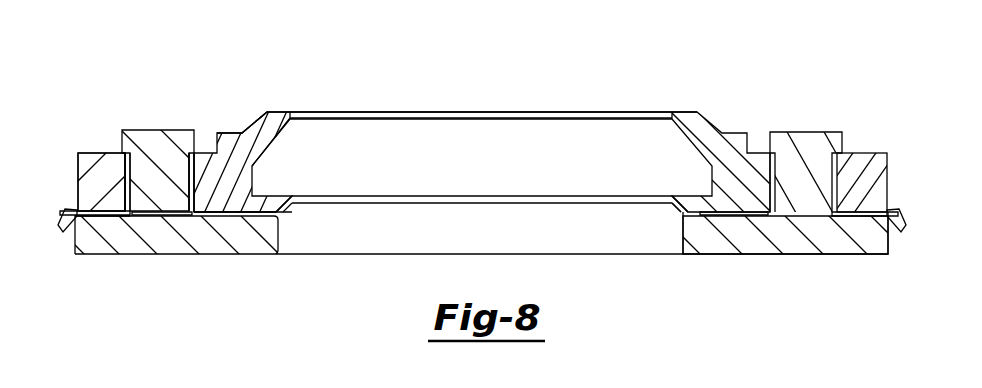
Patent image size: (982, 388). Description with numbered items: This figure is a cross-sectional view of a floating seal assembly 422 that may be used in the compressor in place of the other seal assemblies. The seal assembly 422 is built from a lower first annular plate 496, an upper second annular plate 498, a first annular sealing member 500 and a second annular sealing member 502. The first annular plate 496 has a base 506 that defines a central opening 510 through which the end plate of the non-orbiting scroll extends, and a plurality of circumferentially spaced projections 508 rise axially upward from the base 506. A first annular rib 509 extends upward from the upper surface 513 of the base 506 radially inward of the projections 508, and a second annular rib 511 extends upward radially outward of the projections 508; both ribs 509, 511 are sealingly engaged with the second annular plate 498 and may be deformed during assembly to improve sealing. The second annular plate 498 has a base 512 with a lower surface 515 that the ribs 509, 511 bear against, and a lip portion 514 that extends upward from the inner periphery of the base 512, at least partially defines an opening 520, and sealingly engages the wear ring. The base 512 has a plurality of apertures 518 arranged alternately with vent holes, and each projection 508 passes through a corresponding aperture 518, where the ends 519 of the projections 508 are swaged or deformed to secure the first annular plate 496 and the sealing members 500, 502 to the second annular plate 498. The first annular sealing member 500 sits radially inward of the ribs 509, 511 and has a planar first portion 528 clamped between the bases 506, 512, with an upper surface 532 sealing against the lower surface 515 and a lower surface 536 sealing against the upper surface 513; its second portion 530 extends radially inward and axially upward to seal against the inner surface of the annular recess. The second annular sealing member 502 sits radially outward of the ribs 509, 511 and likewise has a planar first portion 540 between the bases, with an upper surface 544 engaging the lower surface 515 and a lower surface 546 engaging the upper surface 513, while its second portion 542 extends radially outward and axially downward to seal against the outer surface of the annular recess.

The seal assembly 422 is at (789, 58).
The first annular plate 496 is at (803, 296).
The second annular plate 498 is at (90, 131).
The first annular sealing member 500 is at (666, 218).
The second annular sealing member 502 is at (903, 202).
The base 506 is at (853, 240).
The projections 508 is at (814, 160).
The first annular rib 509 is at (208, 215).
The central opening 510 is at (290, 214).
The second annular rib 511 is at (114, 226).
The base 512 is at (90, 181).
The upper surface 513 is at (247, 215).
The lip portion 514 is at (243, 212).
The lower surface 515 is at (192, 216).
The apertures 518 is at (176, 152).
The ends 519 is at (160, 160).
The opening 520 is at (632, 112).
The first portion 528 is at (256, 212).
The second portion 530 is at (281, 222).
The upper surface 532 is at (247, 212).
The lower surface 536 is at (220, 215).
The first portion 540 is at (93, 213).
The second portion 542 is at (66, 226).
The upper surface 544 is at (90, 211).
The lower surface 546 is at (92, 230).